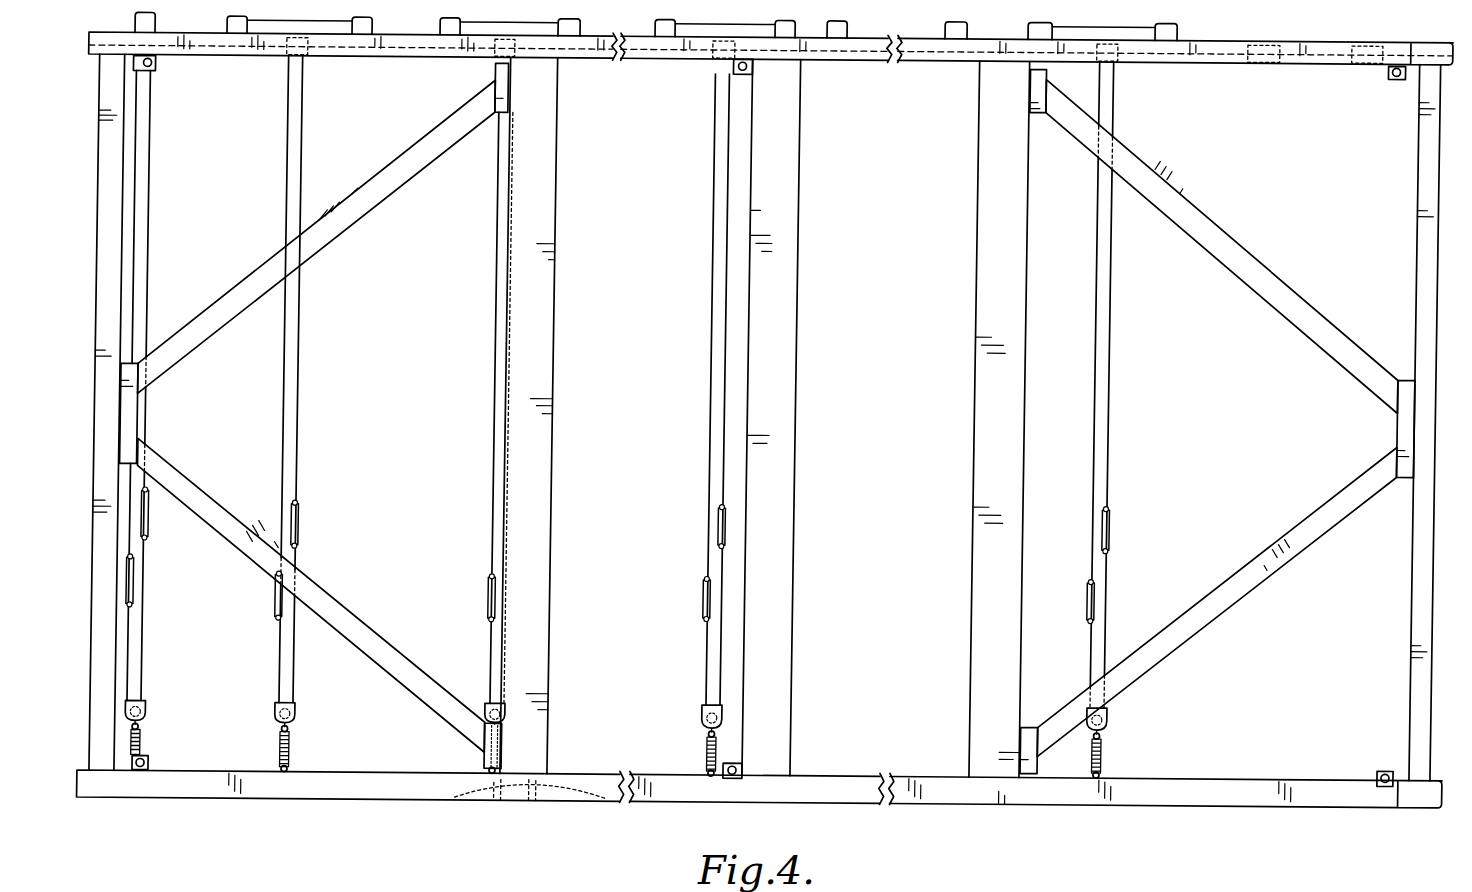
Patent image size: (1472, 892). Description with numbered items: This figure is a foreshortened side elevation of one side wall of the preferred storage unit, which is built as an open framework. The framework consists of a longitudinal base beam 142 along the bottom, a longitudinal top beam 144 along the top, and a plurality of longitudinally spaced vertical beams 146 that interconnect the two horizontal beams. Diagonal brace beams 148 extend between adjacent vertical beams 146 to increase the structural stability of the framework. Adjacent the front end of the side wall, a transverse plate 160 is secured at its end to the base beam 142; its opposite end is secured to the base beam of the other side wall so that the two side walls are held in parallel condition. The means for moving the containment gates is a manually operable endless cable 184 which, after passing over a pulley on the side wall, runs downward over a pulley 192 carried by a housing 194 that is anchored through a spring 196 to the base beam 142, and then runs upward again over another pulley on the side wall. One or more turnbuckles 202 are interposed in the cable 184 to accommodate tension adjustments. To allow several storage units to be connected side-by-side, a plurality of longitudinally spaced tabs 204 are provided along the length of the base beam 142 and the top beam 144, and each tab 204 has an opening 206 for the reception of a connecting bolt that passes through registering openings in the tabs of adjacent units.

The longitudinal base beam 142 is at (647, 797).
The longitudinal top beam 144 is at (590, 56).
The vertical beam 146 is at (1420, 184).
The diagonal brace beam 148 is at (1364, 480).
The transverse plate 160 is at (487, 795).
The endless cable 184 is at (1108, 445).
The pulley 192 is at (300, 714).
The housing 194 is at (293, 705).
The spring 196 is at (292, 740).
The turnbuckle 202 is at (1090, 598).
The tab 204 is at (1380, 772).
The opening 206 is at (1390, 772).